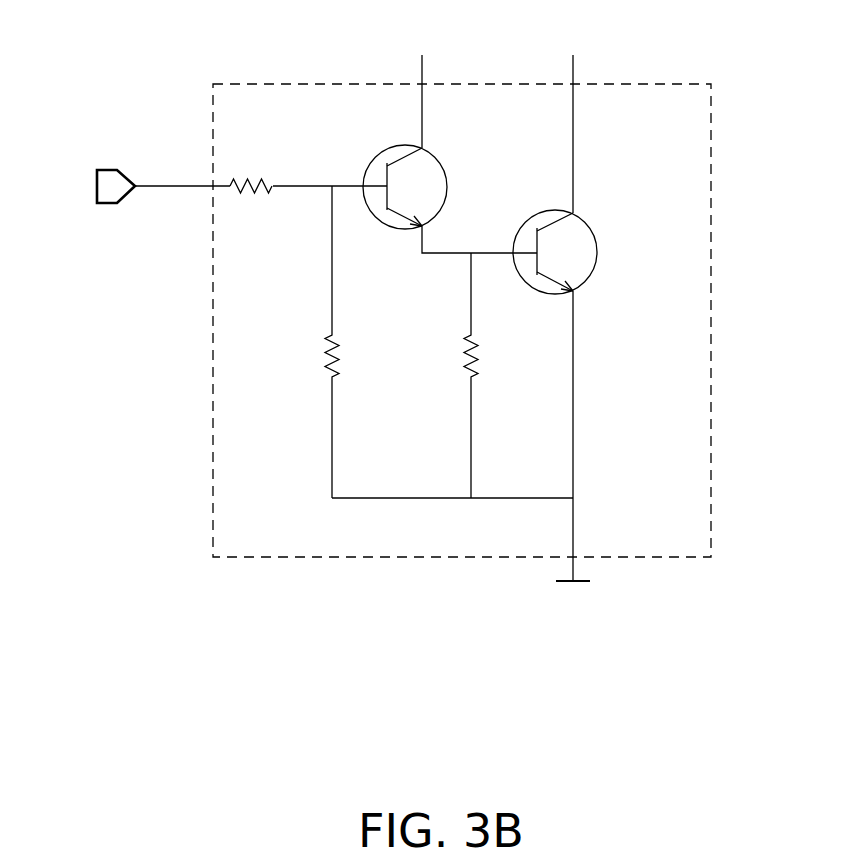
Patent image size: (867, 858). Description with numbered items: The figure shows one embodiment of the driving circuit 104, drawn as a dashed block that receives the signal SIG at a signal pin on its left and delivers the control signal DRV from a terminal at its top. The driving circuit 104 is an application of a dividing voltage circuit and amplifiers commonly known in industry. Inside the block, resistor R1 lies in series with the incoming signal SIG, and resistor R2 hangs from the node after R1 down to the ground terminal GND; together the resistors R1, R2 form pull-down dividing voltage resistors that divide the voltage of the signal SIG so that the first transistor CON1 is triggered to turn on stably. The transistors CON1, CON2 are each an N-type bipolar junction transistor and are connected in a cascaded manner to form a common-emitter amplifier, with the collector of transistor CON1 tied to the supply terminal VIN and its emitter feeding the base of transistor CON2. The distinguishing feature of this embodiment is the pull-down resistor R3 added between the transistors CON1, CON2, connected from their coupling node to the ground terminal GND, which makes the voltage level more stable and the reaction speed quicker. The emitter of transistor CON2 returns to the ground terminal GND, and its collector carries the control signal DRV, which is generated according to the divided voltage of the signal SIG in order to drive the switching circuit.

The driving circuit 104 is at (687, 85).
The signal SIG is at (182, 170).
The resistor R1 is at (251, 172).
The resistor R2 is at (312, 342).
The pull-down resistor R3 is at (450, 375).
The transistor CON1 is at (448, 187).
The transistor CON2 is at (598, 252).
The input voltage terminal VIN is at (419, 84).
The control signal DRV is at (570, 117).
The ground terminal GND is at (578, 455).